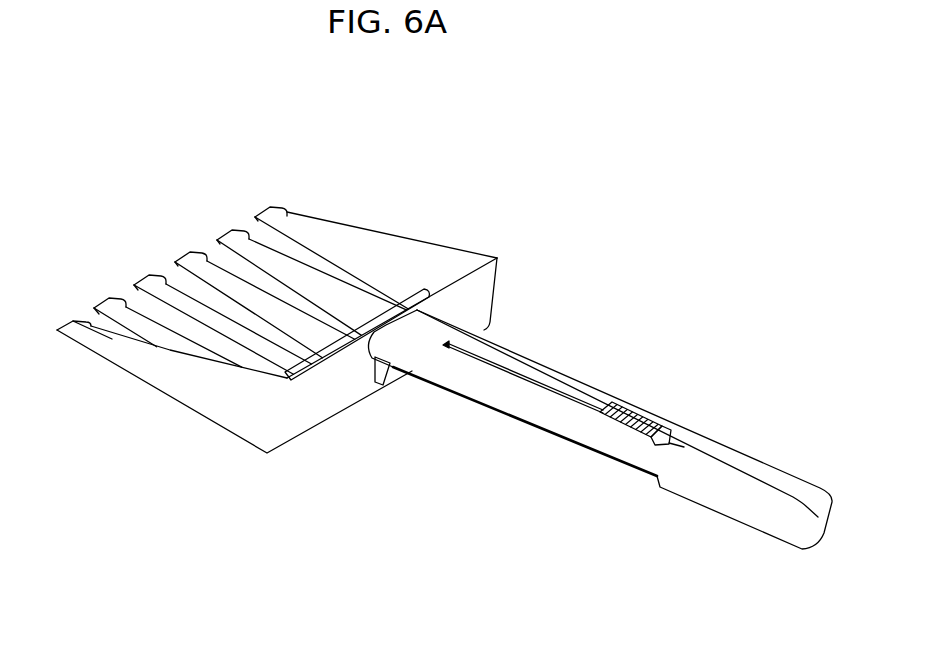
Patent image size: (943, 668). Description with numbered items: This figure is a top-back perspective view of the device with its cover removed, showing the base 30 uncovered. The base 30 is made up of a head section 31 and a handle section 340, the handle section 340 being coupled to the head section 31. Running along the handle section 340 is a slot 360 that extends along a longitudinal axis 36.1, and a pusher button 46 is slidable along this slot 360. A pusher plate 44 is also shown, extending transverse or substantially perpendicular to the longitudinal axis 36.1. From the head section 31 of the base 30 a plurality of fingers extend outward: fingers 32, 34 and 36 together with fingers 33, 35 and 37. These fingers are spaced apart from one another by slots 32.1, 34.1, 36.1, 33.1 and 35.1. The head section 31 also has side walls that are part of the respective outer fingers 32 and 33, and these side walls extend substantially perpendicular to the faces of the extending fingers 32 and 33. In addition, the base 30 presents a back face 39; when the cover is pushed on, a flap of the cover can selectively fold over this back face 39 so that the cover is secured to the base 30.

The base 30 is at (358, 164).
The head section 31 is at (268, 432).
The finger 32 is at (282, 209).
The slot 32.1 is at (254, 224).
The finger 33 is at (73, 321).
The slot 33.1 is at (99, 317).
The finger 34 is at (240, 230).
The slot 34.1 is at (210, 246).
The finger 35 is at (122, 307).
The slot 35.1 is at (136, 294).
The finger 36 is at (193, 252).
The longitudinal axis / slot 36.1 is at (174, 269).
The finger 37 is at (150, 274).
The back face 39 is at (340, 403).
The pusher plate 44 is at (387, 311).
The pusher button 46 is at (628, 405).
The handle section 340 is at (690, 488).
The slot 360 is at (503, 367).